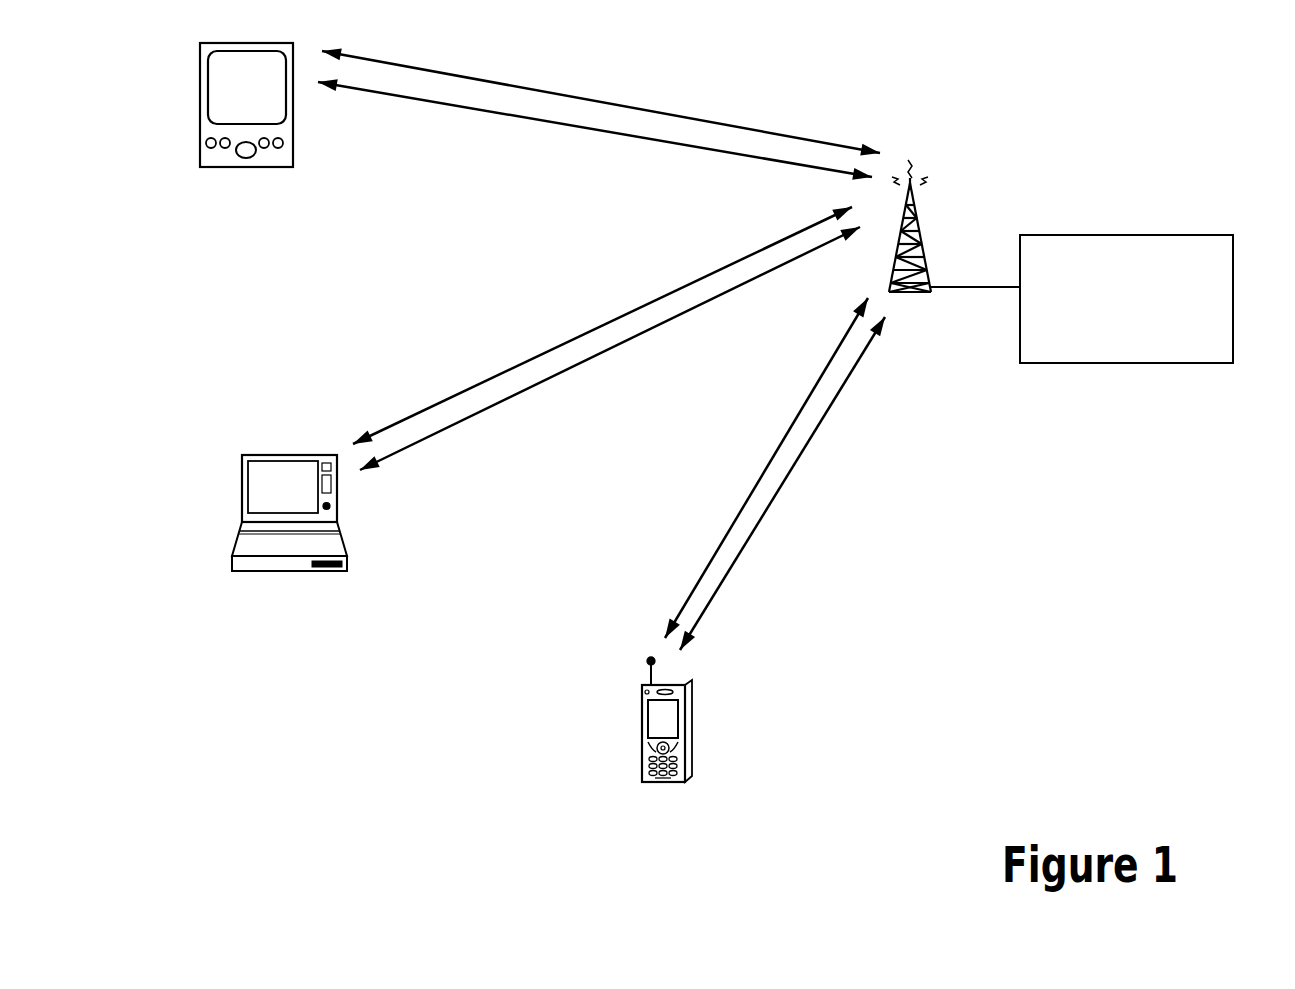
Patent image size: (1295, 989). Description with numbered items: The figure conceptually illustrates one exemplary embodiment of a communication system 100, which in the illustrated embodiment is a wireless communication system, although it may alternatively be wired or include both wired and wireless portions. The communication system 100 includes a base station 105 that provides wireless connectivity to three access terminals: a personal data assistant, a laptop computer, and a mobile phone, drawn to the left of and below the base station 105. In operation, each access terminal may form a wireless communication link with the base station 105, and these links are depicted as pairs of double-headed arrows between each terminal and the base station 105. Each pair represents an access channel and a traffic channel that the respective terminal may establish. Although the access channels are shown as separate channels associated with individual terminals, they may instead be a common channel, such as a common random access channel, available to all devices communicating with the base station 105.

The communication system 100 is at (1183, 107).
The base station 105 is at (1112, 342).